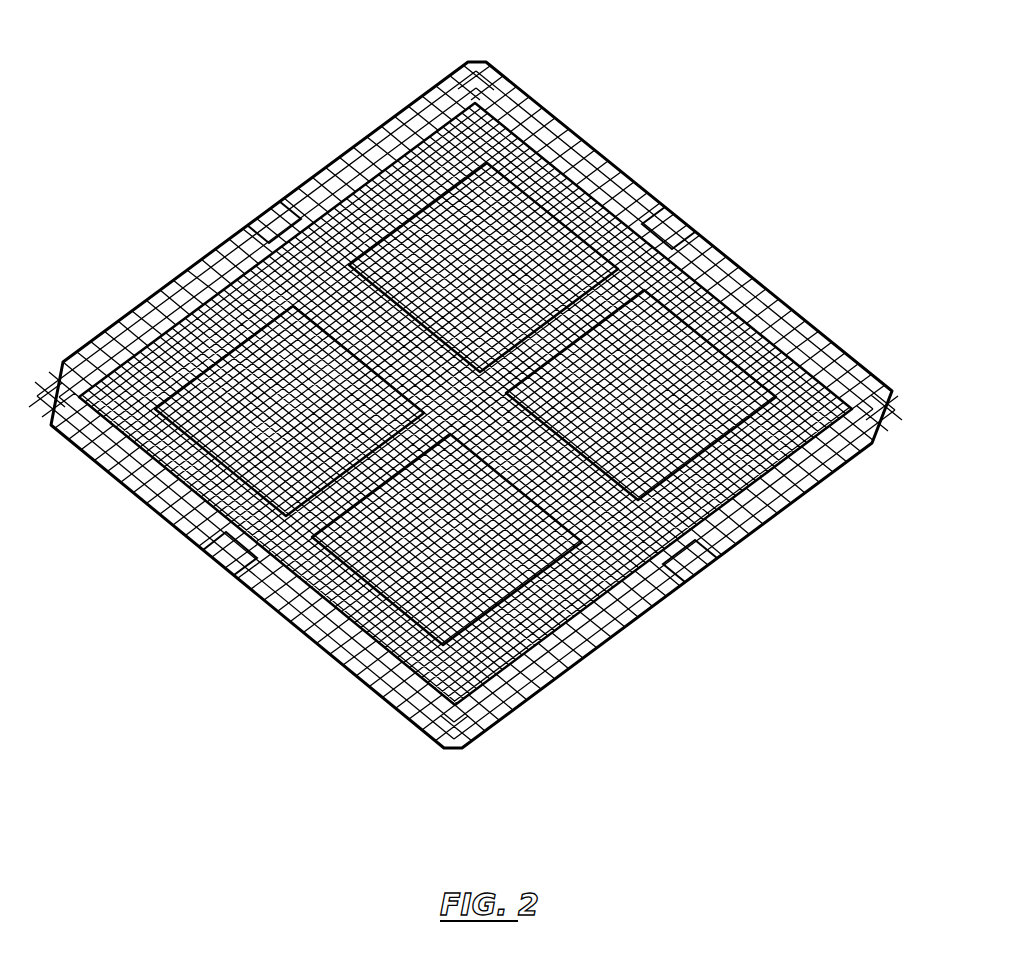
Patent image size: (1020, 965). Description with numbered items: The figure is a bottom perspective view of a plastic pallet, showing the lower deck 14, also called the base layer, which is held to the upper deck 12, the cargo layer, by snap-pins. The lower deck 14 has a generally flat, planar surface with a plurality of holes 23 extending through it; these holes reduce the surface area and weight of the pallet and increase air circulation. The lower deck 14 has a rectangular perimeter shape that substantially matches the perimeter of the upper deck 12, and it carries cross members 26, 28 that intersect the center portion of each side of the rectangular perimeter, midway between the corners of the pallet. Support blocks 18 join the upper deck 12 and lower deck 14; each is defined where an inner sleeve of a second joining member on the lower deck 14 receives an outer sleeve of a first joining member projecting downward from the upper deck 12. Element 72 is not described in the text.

The upper deck 12 is at (168, 287).
The lower deck 14 is at (173, 528).
The support block 18 is at (258, 232).
The holes 23 is at (712, 543).
The cross member 26 is at (572, 540).
The cross member 28 is at (548, 343).
The deck edge 72 is at (378, 692).